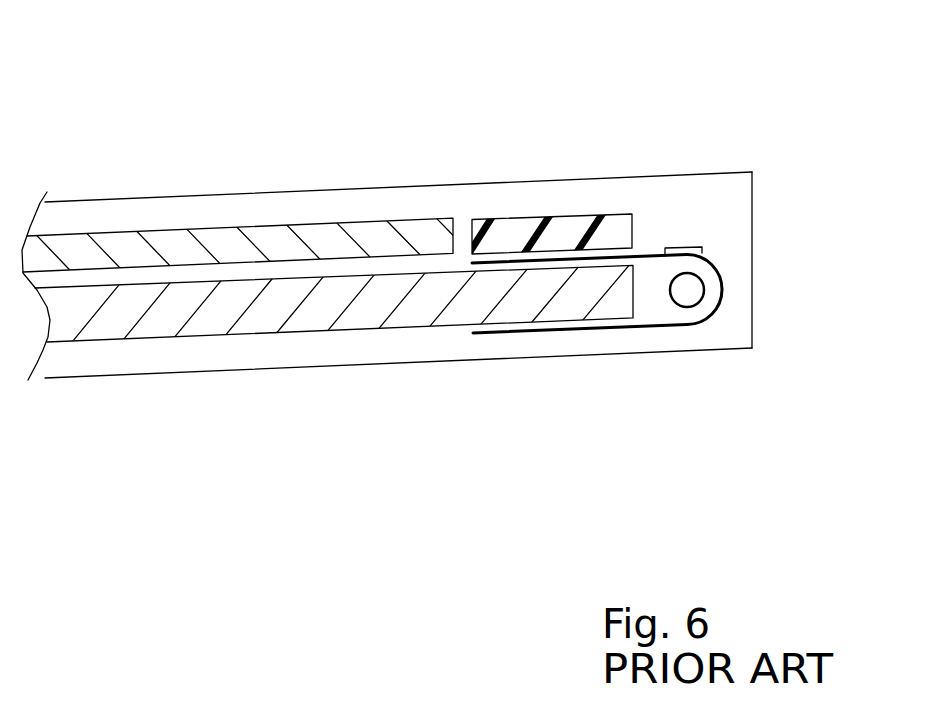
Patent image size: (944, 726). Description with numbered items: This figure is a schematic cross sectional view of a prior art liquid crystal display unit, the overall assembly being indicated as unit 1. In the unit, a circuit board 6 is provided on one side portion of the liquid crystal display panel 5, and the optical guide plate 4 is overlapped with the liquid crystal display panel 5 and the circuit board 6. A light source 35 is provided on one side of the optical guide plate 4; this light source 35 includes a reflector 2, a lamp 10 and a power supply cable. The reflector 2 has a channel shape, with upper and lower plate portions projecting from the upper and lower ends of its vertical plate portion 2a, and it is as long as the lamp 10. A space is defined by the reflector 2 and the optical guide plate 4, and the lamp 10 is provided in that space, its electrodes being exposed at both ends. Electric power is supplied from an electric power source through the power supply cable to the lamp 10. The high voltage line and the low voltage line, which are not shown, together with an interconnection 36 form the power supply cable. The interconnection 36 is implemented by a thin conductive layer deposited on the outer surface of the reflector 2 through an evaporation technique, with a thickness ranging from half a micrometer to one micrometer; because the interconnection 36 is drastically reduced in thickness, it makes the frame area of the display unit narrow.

The backlight unit 1 is at (712, 332).
The reflector 2 is at (503, 332).
The vertical plate portion 2a is at (720, 292).
The optical guide plate 4 is at (218, 312).
The liquid crystal display panel 5 is at (163, 247).
The circuit board 6 is at (535, 218).
The lamp 10 is at (672, 293).
The light source 35 is at (717, 233).
The interconnection 36 is at (676, 247).